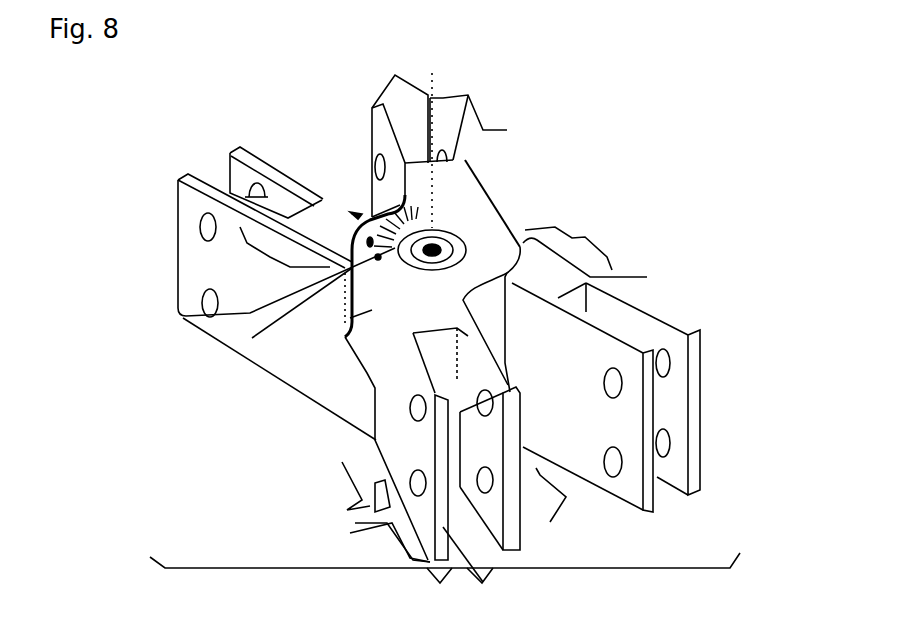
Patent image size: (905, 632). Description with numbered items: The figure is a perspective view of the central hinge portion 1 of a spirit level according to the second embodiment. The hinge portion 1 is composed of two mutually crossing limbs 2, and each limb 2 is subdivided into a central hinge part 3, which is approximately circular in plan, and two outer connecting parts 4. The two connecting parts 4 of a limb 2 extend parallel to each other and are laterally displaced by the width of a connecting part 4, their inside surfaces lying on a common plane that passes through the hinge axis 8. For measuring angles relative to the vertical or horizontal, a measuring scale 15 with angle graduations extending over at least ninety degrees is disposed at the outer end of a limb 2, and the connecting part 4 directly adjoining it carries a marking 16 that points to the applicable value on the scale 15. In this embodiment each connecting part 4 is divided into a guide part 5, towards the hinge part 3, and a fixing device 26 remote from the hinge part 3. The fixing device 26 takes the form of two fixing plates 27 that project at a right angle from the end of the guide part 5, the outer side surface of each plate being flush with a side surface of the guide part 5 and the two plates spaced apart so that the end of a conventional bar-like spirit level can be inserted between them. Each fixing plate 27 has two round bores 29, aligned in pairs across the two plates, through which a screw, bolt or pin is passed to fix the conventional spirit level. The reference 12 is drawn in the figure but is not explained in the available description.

The central hinge portion 1 is at (445, 585).
The limb 2 is at (477, 193).
The hinge part 3 is at (352, 338).
The connecting part 4 is at (507, 130).
The guide part 5 is at (290, 267).
The hinge axis 8 is at (395, 248).
The stop edge 12 is at (252, 338).
The measuring scale 15 is at (188, 318).
The marking 16 is at (345, 213).
The fixing device 26 is at (350, 533).
The fixing plate 27 is at (485, 583).
The bore 29 is at (370, 160).